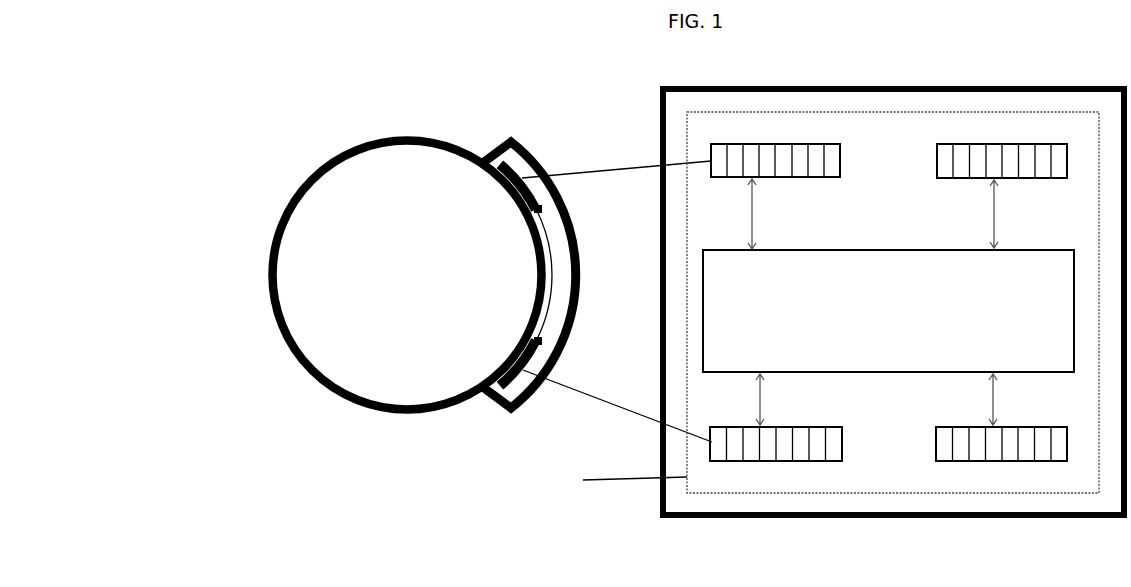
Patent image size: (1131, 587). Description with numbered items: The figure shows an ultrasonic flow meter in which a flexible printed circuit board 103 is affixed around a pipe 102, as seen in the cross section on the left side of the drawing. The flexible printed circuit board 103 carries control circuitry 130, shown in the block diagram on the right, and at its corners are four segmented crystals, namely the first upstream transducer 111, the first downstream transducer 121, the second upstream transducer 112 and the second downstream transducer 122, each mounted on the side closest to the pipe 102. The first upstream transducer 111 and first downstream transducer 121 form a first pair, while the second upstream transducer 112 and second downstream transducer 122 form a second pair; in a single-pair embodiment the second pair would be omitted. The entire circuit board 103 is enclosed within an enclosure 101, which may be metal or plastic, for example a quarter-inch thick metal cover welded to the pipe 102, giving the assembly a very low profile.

The enclosure 101 is at (662, 118).
The pipe 102 is at (333, 155).
The flexible printed circuit board 103 is at (546, 312).
The first upstream transducer 111 is at (527, 180).
The second upstream transducer 112 is at (588, 395).
The first downstream transducer 121 is at (1062, 194).
The second downstream transducer 122 is at (1003, 427).
The control circuitry 130 is at (888, 311).